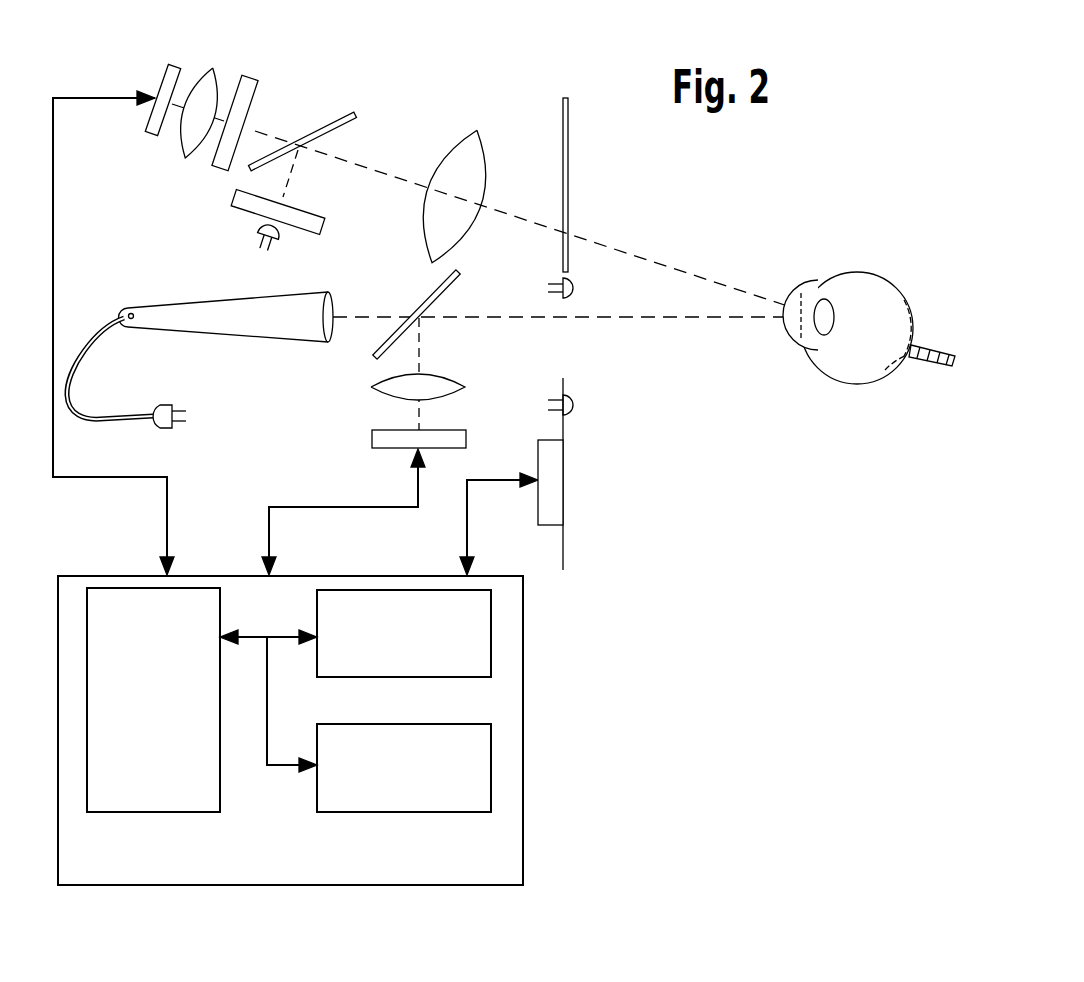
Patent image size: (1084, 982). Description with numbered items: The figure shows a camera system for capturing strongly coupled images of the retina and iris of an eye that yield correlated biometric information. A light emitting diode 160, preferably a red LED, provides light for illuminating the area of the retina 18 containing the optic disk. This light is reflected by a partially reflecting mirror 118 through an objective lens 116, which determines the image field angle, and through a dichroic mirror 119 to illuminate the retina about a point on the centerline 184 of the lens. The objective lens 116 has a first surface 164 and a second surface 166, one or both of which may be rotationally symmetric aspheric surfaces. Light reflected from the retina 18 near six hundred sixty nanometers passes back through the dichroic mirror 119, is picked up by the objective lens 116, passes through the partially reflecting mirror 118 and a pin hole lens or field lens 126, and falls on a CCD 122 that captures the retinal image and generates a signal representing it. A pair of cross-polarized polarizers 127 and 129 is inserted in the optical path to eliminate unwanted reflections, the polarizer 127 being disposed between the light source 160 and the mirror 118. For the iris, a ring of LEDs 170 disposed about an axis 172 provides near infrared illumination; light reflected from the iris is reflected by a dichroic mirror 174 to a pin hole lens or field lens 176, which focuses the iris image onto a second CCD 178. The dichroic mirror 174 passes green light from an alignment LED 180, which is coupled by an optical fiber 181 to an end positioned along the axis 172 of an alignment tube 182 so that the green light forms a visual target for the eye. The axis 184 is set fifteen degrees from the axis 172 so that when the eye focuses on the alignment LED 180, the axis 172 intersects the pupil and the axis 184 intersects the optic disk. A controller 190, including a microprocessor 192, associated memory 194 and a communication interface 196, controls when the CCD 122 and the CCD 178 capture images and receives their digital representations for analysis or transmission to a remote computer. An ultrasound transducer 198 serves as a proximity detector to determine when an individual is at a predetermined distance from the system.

The retina 18 is at (870, 272).
The objective lens 116 is at (448, 156).
The partially reflecting mirror 118 is at (332, 118).
The dichroic mirror 119 is at (569, 146).
The CCD 122 is at (163, 72).
The pin hole lens or field lens 126 is at (208, 70).
The polarizer 127 is at (322, 223).
The polarizer 129 is at (258, 88).
The light emitting diode 160 is at (256, 233).
The first surface 164 is at (428, 222).
The second surface 166 is at (485, 150).
The LEDs 170 is at (582, 290).
The axis 172 is at (700, 318).
The dichroic mirror 174 is at (457, 283).
The pin hole lens or field lens 176 is at (375, 386).
The second CCD 178 is at (370, 436).
The alignment LED 180 is at (160, 406).
The optical fiber 181 is at (88, 323).
The alignment tube 182 is at (220, 306).
The axis 184 is at (670, 263).
The controller 190 is at (513, 843).
The microprocessor 192 is at (110, 594).
The memory 194 is at (491, 612).
The communication interface 196 is at (491, 760).
The transducer 198 is at (550, 525).